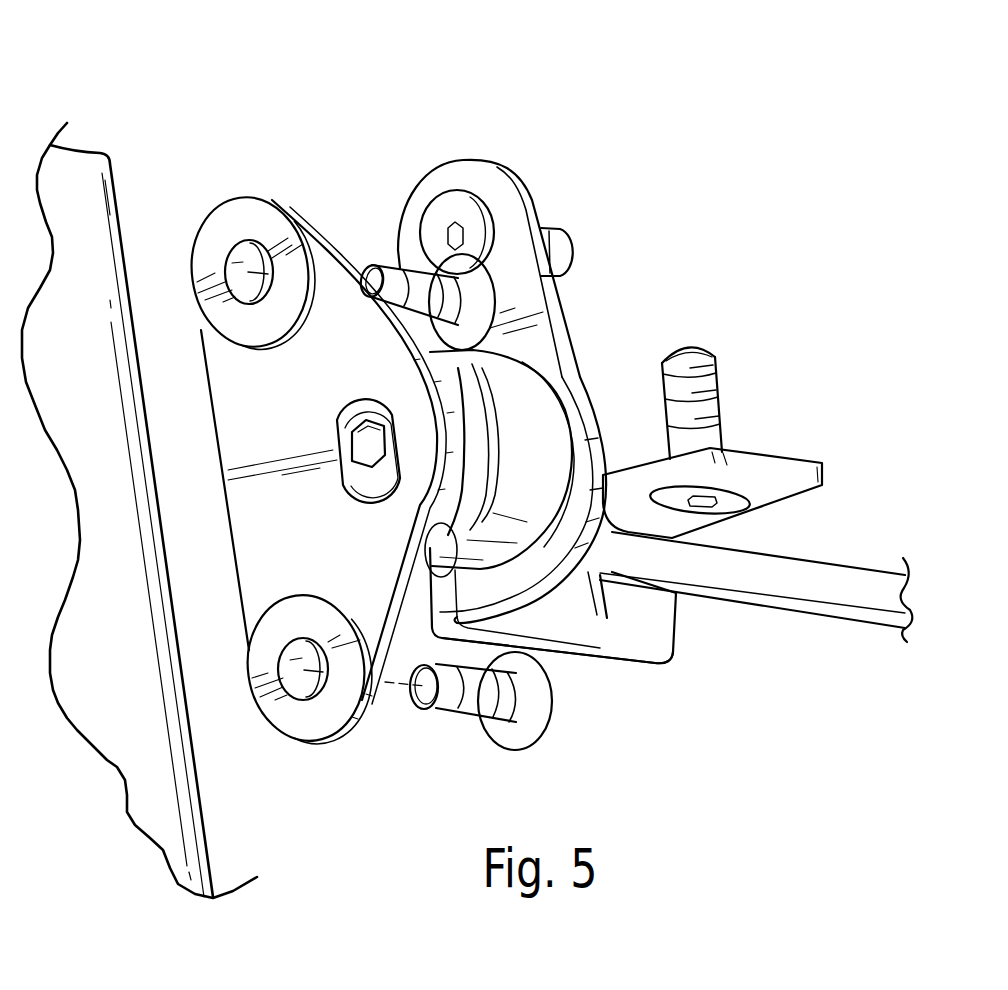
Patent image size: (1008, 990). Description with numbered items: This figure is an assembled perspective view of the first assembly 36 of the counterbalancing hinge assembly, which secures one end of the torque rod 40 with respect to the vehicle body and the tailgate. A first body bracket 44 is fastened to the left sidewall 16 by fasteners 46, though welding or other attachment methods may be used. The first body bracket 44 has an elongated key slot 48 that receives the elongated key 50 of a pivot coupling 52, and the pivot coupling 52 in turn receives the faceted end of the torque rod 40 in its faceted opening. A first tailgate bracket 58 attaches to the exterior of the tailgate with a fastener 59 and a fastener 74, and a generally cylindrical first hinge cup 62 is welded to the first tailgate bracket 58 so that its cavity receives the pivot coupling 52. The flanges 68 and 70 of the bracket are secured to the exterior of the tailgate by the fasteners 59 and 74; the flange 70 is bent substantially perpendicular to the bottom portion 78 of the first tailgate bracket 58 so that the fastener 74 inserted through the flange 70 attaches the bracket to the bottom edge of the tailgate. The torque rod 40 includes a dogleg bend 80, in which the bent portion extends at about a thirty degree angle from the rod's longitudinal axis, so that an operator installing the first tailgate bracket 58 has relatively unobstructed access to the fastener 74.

The left sidewall 16 is at (100, 215).
The first assembly 36 is at (233, 100).
The torque rod 40 is at (852, 610).
The first body bracket 44 is at (253, 610).
The fasteners 46 is at (397, 277).
The elongated key slot 48 is at (350, 487).
The elongated key 50 is at (350, 408).
The pivot coupling 52 is at (427, 570).
The first tailgate bracket 58 is at (520, 567).
The fastener 59 is at (577, 252).
The first hinge cup 62 is at (545, 418).
The flange 68 is at (495, 160).
The flange 70 is at (808, 463).
The fastener 74 is at (707, 393).
The bottom portion 78 is at (642, 640).
The bend 80 is at (628, 547).